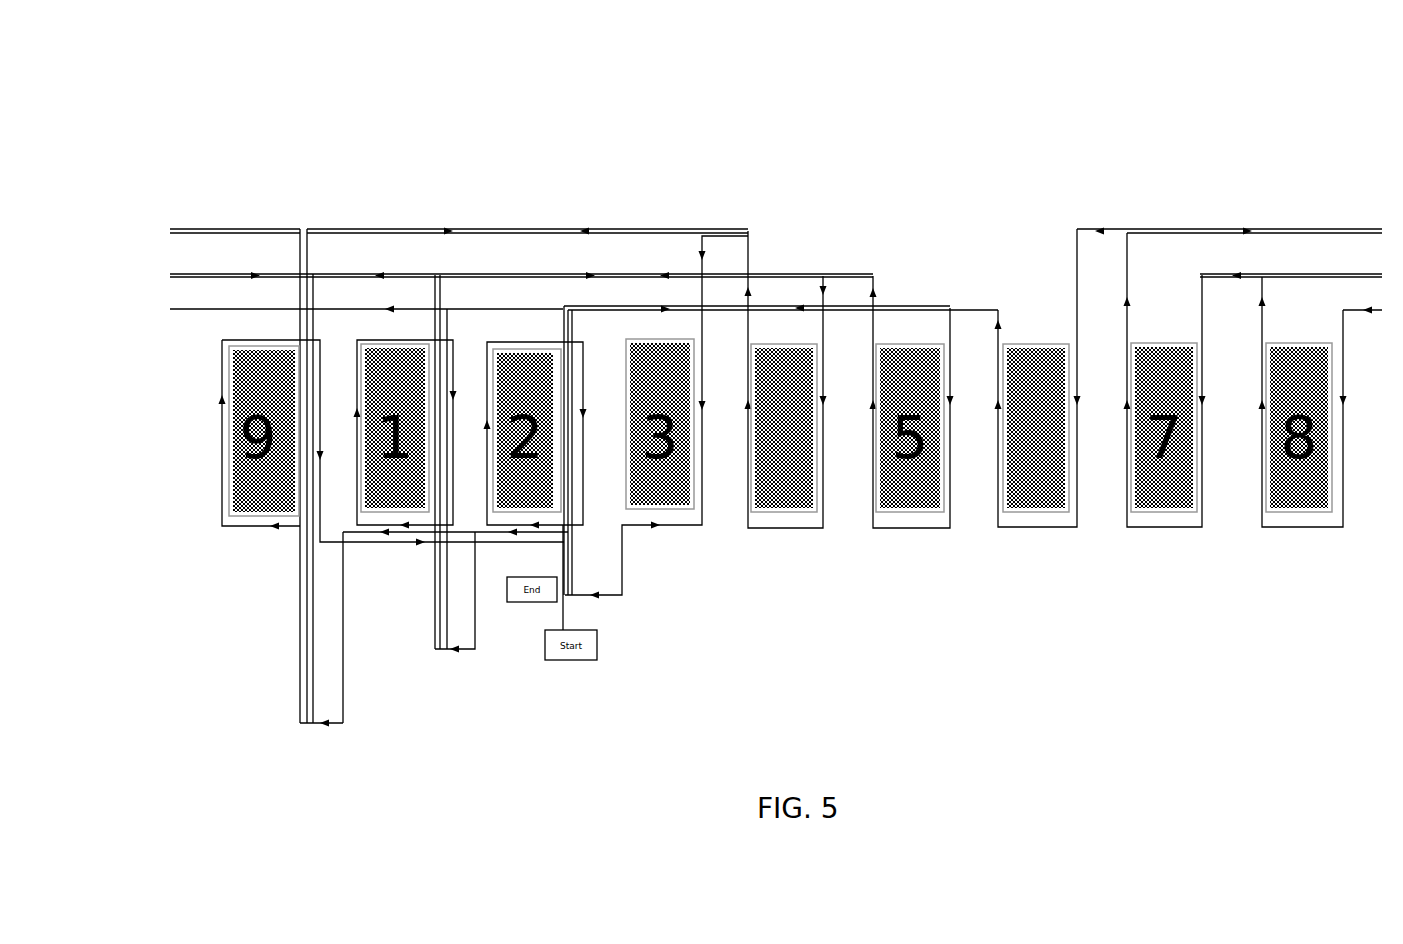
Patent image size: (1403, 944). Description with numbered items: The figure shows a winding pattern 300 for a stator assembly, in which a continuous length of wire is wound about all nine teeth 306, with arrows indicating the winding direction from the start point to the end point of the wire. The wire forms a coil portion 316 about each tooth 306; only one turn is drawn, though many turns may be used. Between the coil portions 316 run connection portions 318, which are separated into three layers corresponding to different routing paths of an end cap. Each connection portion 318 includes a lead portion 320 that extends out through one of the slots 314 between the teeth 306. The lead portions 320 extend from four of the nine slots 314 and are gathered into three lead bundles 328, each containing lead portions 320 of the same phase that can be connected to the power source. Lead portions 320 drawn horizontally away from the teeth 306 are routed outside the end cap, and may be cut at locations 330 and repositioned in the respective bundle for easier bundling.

The winding pattern 300 is at (348, 84).
The tooth 306 is at (1058, 505).
The slot 314 is at (978, 516).
The coil portion 316 is at (779, 524).
The connection portion 318 is at (641, 222).
The lead portion 320 is at (297, 575).
The lead bundle 328 is at (307, 734).
The cut location 330 is at (345, 726).